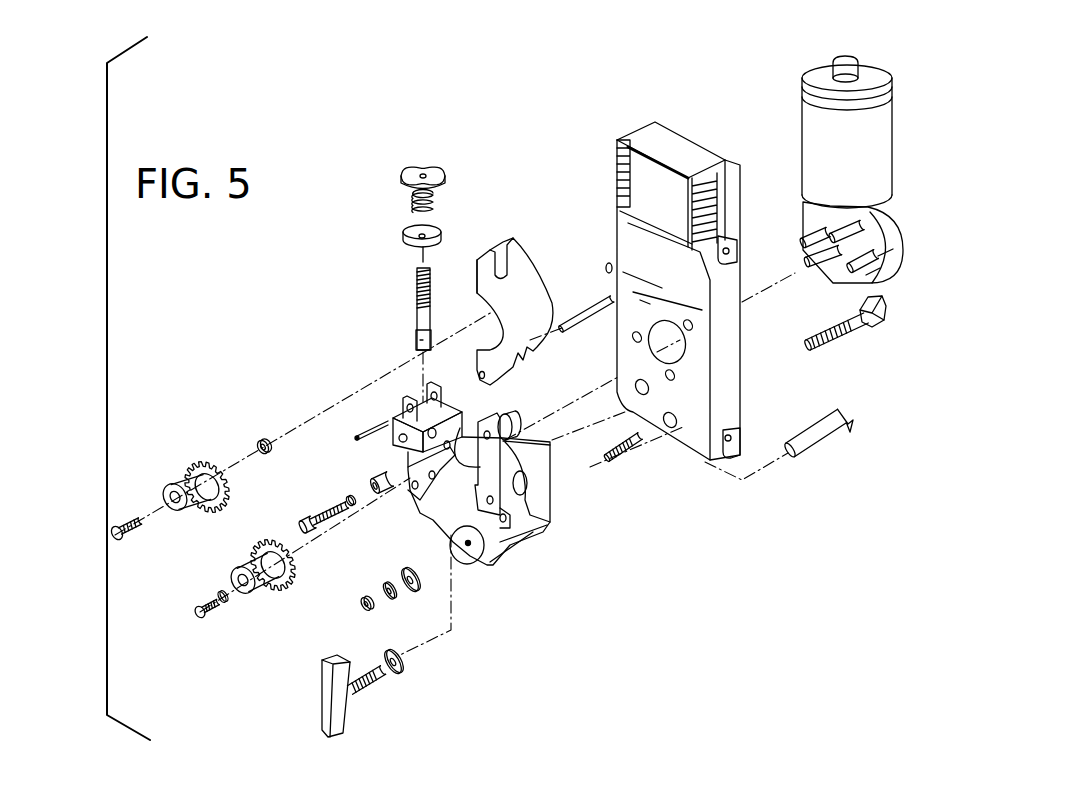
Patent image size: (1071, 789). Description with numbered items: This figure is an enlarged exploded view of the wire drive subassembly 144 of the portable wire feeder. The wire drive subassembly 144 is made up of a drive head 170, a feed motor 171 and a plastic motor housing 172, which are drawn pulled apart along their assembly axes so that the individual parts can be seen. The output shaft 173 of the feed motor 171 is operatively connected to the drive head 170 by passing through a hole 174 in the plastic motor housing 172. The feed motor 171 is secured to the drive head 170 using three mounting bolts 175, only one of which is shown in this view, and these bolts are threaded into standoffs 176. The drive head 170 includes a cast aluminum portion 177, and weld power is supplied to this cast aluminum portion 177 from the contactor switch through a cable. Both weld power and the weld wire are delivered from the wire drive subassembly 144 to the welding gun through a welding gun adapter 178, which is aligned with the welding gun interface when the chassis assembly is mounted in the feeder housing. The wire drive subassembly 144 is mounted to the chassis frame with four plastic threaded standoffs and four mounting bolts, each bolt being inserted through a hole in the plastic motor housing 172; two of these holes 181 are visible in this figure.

The wire drive subassembly 144 is at (549, 673).
The drive head 170 is at (252, 130).
The feed motor 171 is at (893, 133).
The plastic motor housing 172 is at (655, 128).
The output shaft 173 is at (808, 268).
The hole 174 is at (655, 330).
The mounting bolts 175 is at (318, 508).
The standoffs 176 is at (805, 238).
The cast aluminum portion 177 is at (500, 543).
The welding gun adapter 178 is at (524, 482).
The holes 181 is at (728, 248).